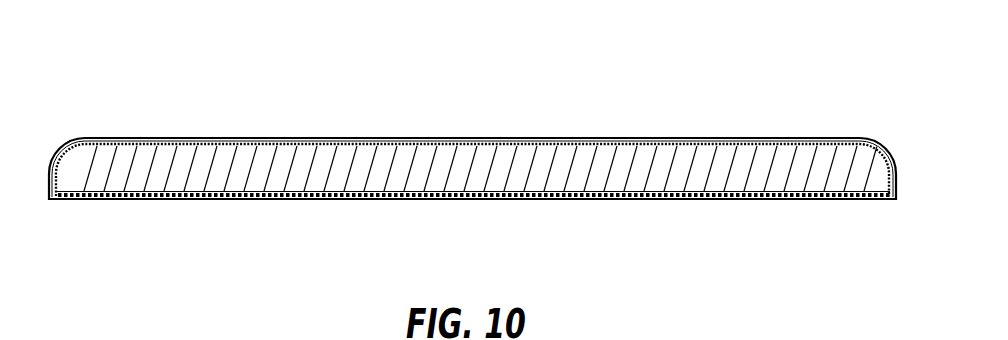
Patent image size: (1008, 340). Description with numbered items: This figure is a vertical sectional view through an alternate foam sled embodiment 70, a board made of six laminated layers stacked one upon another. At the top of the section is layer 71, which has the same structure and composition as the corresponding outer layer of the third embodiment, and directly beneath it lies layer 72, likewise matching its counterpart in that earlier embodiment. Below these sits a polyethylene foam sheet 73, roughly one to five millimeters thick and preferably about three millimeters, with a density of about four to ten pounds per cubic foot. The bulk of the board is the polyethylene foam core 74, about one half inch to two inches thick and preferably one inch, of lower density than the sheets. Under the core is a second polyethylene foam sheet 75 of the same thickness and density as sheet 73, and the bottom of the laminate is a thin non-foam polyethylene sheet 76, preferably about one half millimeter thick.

The foam sled embodiment 70 is at (146, 86).
The layer 71 is at (752, 134).
The layer 72 is at (782, 134).
The polyethylene foam sheet 73 is at (836, 134).
The polyethylene foam core 74 is at (725, 173).
The polyethylene foam sheet 75 is at (638, 200).
The non-foam polyethylene sheet 76 is at (554, 200).